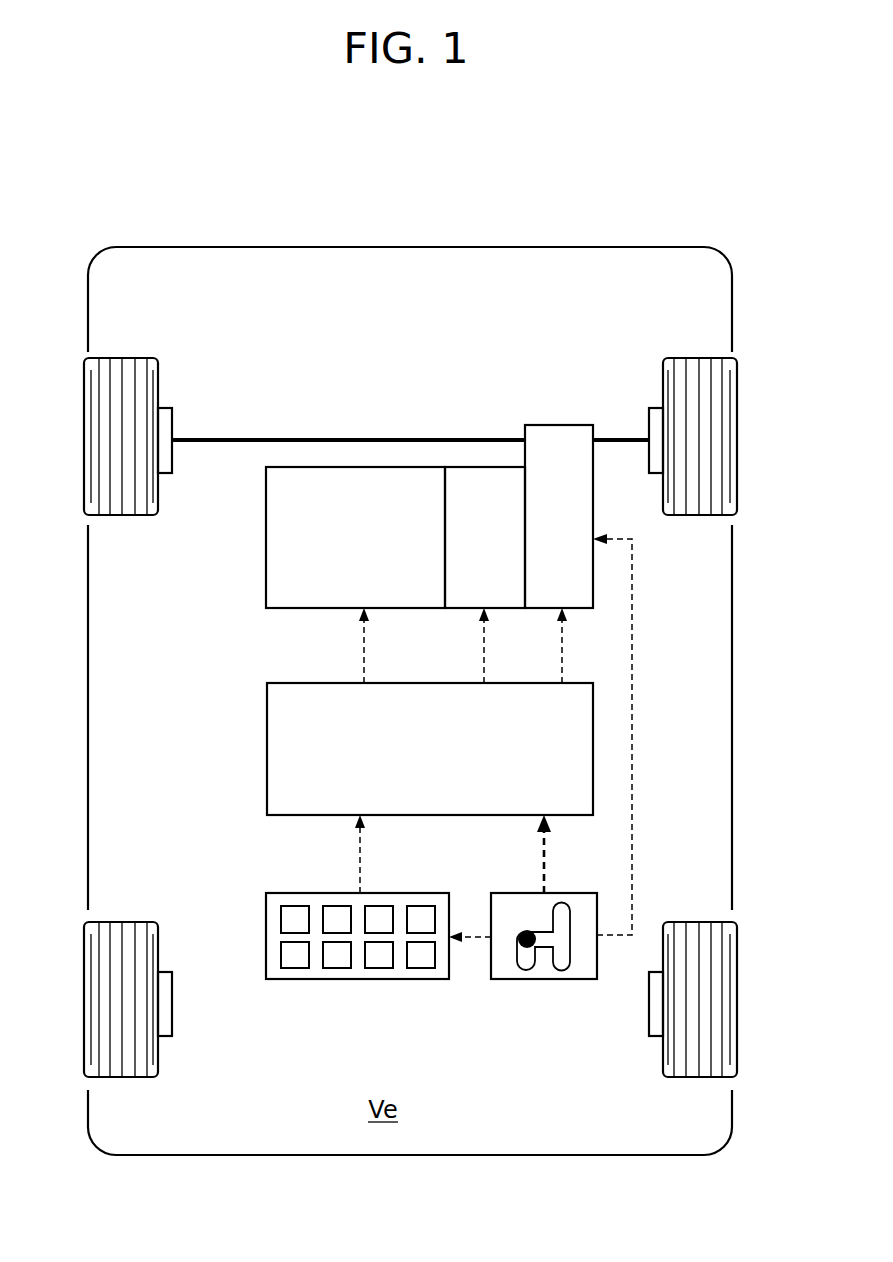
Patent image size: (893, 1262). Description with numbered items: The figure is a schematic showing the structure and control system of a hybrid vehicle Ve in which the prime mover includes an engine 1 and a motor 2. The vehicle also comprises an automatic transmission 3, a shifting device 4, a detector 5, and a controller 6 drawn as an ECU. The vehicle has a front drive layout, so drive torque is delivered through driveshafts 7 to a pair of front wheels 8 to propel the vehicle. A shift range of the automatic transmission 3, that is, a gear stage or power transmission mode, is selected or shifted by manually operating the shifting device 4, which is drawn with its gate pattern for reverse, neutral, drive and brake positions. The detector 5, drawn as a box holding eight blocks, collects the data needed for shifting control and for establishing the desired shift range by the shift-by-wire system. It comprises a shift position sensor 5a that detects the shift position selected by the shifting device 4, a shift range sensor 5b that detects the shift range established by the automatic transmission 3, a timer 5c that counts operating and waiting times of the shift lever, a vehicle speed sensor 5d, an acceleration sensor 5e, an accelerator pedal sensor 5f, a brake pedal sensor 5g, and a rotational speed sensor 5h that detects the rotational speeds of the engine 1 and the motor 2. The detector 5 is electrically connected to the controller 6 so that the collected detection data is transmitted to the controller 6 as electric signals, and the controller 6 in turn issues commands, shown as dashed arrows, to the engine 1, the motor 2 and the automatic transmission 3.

The engine 1 is at (266, 545).
The motor 2 is at (487, 467).
The automatic transmission 3 is at (555, 425).
The shifting device 4 is at (540, 979).
The detector 5 is at (266, 940).
The shift position sensor 5a is at (290, 906).
The shift range sensor 5b is at (340, 906).
The timer 5c is at (380, 906).
The vehicle speed sensor 5d is at (420, 906).
The acceleration sensor 5e is at (292, 968).
The accelerator pedal sensor 5f is at (338, 968).
The brake pedal sensor 5g is at (380, 968).
The rotational speed sensor 5h is at (422, 968).
The controller 6 is at (267, 747).
The driveshafts 7 is at (300, 437).
The front wheels 8 is at (84, 440).